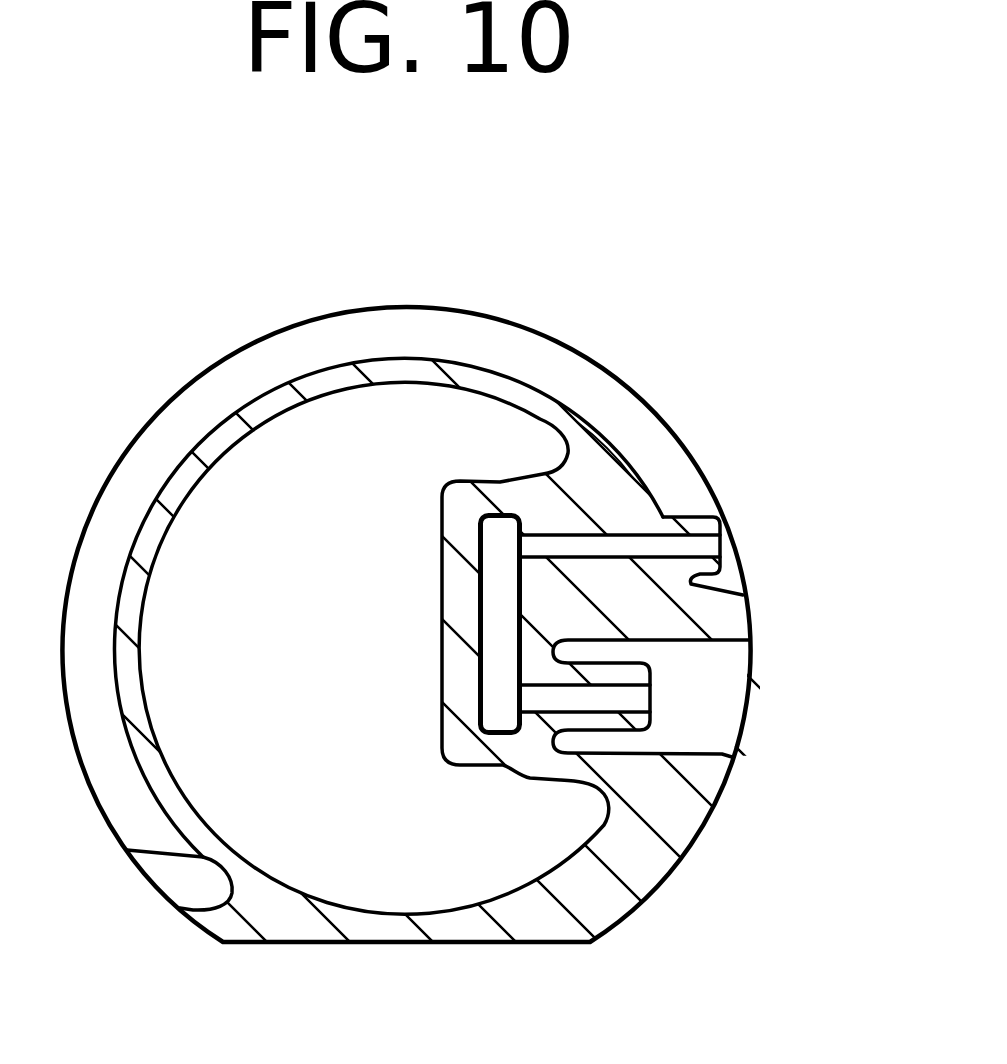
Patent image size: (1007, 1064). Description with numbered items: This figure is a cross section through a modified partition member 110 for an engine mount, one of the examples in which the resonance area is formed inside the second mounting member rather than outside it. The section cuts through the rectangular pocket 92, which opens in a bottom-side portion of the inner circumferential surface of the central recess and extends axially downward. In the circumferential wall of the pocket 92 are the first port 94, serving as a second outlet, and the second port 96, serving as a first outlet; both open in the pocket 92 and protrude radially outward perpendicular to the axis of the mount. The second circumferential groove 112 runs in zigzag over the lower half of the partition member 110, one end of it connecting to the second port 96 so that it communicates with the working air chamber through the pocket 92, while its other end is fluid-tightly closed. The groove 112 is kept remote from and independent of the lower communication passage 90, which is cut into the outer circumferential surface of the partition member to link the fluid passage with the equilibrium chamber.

The lower communication passage 90 is at (377, 942).
The rectangular pocket 92 is at (478, 611).
The first port 94 is at (650, 720).
The second port 96 is at (703, 523).
The partition member 110 is at (571, 248).
The second circumferential groove 112 is at (260, 398).